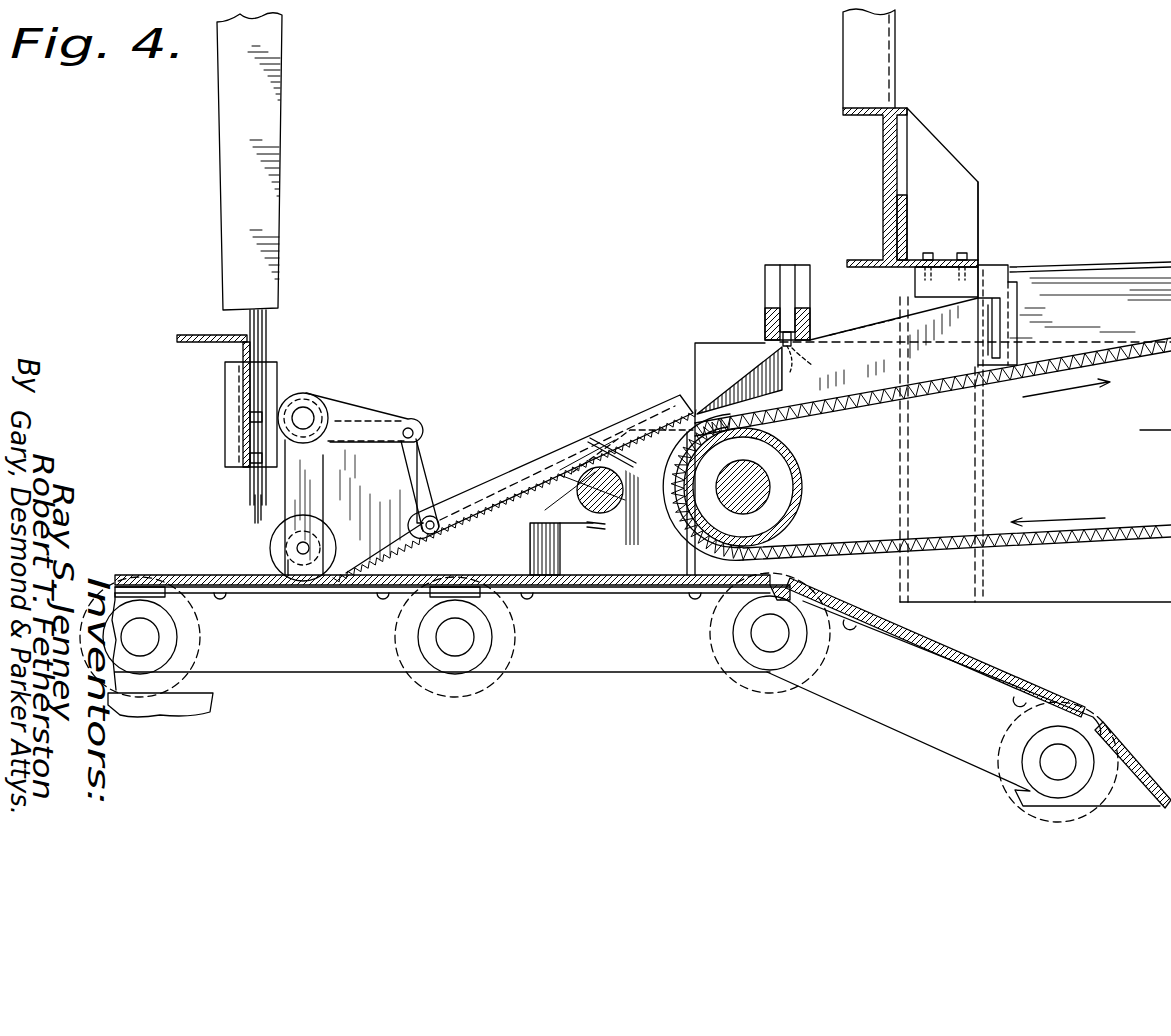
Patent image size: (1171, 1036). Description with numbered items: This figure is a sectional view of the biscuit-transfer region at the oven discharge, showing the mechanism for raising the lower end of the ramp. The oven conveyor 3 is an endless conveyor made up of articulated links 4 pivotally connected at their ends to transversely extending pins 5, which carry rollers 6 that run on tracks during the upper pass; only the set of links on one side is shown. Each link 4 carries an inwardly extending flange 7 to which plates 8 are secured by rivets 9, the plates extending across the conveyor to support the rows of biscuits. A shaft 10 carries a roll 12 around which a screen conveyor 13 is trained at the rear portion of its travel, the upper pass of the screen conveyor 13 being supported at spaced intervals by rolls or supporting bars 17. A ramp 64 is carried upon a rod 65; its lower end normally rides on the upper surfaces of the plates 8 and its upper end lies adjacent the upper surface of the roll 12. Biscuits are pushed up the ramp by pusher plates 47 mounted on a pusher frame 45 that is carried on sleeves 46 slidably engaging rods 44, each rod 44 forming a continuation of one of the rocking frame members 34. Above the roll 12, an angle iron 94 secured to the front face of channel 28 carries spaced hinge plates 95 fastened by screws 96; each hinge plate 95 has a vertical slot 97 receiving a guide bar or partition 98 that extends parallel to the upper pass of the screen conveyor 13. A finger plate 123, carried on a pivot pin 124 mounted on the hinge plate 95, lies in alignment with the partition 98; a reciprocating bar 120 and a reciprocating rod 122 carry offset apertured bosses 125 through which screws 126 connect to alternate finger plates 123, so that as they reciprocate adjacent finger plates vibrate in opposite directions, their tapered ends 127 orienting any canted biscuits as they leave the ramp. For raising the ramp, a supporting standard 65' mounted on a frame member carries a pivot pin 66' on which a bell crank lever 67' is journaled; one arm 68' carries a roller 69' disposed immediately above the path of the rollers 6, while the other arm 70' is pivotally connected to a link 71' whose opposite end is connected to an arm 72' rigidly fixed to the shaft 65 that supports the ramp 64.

The conveyor 3 is at (528, 690).
The links 4 is at (335, 660).
The pins 5 is at (455, 640).
The rollers 6 is at (480, 694).
The flanges 7 is at (340, 594).
The plates 8 is at (262, 586).
The rivets 9 is at (385, 599).
The shaft 10 is at (760, 478).
The roll 12 is at (805, 485).
The screen conveyor 13 is at (948, 400).
The rolls or supporting bars 17 is at (1155, 417).
The channel 28 is at (883, 192).
The frame members 34 is at (270, 118).
The rod 44 is at (245, 485).
The pusher frame 45 is at (196, 335).
The sleeves 46 is at (230, 403).
The pusher plates 47 is at (255, 500).
The ramp 64 is at (509, 481).
The rod 65 is at (611, 502).
The supporting standard 65' is at (375, 497).
The pivot pin 66' is at (328, 397).
The bell crank lever 67' is at (365, 403).
The arm 68' is at (273, 548).
The roller 69' is at (300, 599).
The arm 70' is at (416, 408).
The link 71' is at (440, 483).
The arm 72' is at (451, 500).
The angle iron 94 is at (907, 215).
The hinge plates 95 is at (1008, 270).
The screws 96 is at (930, 253).
The vertical slot 97 is at (1010, 315).
The guide bar or partition 98 is at (1112, 275).
The reciprocating bar 120 is at (795, 333).
The reciprocating rod 122 is at (767, 325).
The finger plate 123 is at (857, 327).
The pivot pin 124 is at (1005, 270).
The offset apertured bosses 125 is at (795, 350).
The screw 126 is at (770, 380).
The tapered end 127 is at (738, 382).